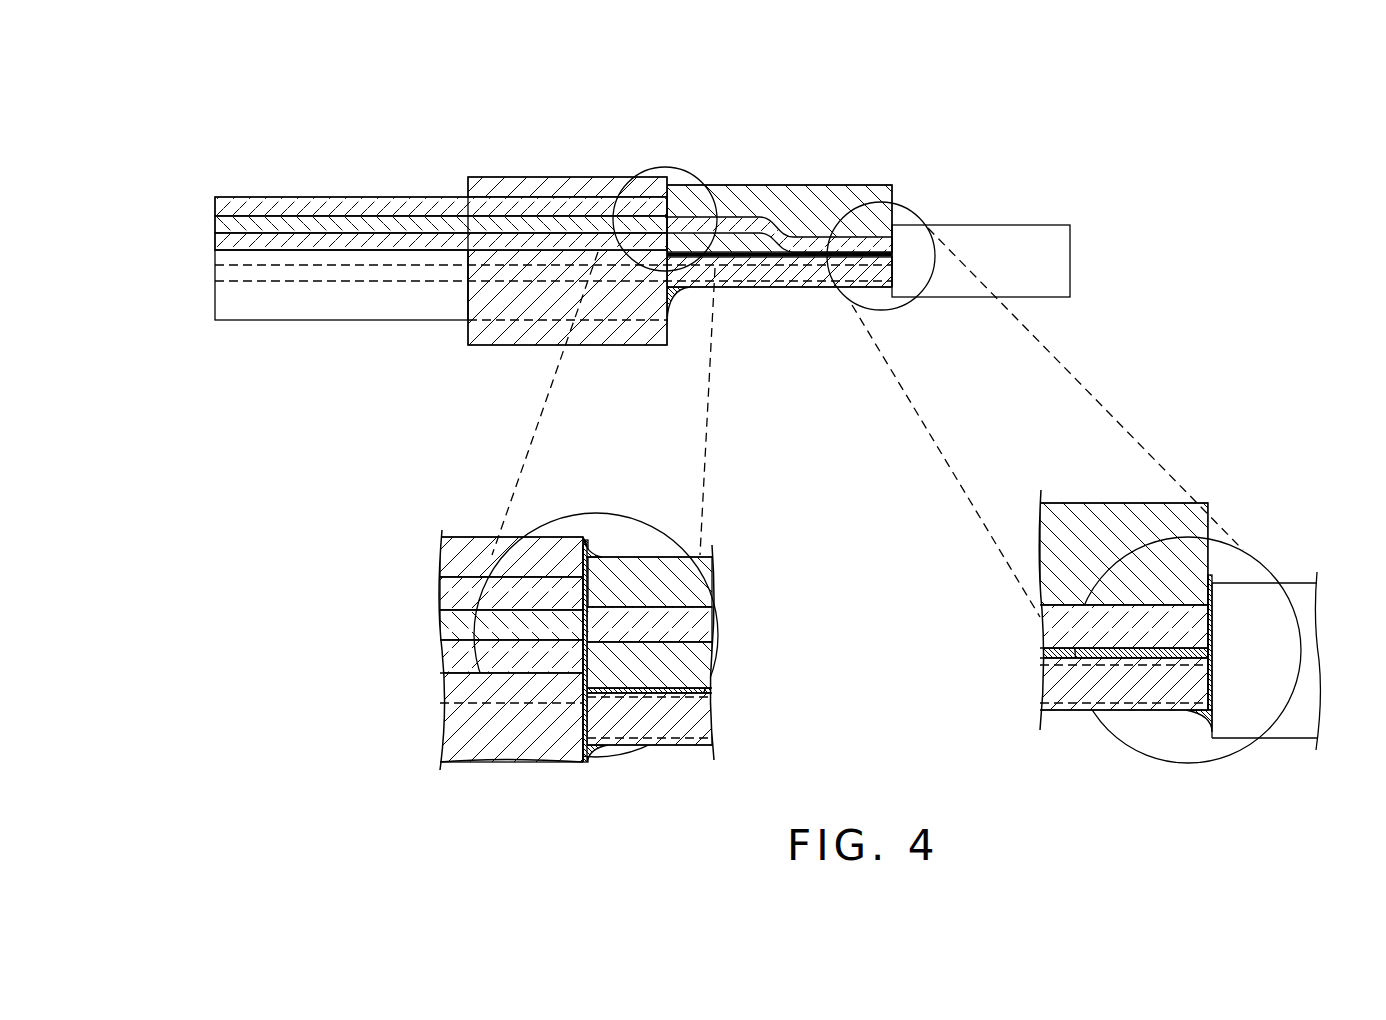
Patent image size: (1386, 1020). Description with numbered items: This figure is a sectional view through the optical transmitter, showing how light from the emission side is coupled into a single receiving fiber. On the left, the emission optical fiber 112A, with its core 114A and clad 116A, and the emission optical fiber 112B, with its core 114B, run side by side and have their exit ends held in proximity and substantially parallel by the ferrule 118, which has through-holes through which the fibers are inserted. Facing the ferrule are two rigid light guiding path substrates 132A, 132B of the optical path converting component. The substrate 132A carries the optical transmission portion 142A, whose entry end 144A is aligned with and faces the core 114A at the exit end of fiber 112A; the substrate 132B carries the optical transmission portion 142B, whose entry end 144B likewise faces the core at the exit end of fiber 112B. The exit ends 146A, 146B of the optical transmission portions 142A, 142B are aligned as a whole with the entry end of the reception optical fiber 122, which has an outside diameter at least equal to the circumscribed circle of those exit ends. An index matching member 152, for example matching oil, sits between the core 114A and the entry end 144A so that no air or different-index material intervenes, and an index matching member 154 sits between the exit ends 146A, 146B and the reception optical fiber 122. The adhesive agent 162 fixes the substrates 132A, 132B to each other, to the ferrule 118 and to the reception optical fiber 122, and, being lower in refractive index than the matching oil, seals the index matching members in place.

The emission optical fiber 112A is at (352, 146).
The core 114A is at (367, 225).
The clad 116A is at (428, 205).
The ferrule 118 is at (515, 185).
The emission optical fiber 112B is at (292, 312).
The core 114B is at (487, 737).
The reception optical fiber 122 is at (1028, 237).
The rigid light guiding path substrate 132A is at (850, 198).
The rigid light guiding path substrate 132B is at (755, 290).
The optical transmission portion 142A is at (793, 242).
The optical transmission portion 142B is at (820, 293).
The entry end 144A is at (690, 622).
The entry end 144B is at (712, 722).
The exit end 146A is at (1130, 627).
The exit end 146B is at (1158, 712).
The index matching member 152 is at (594, 627).
The index matching member 154 is at (1212, 625).
The adhesive agent 162 is at (678, 302).